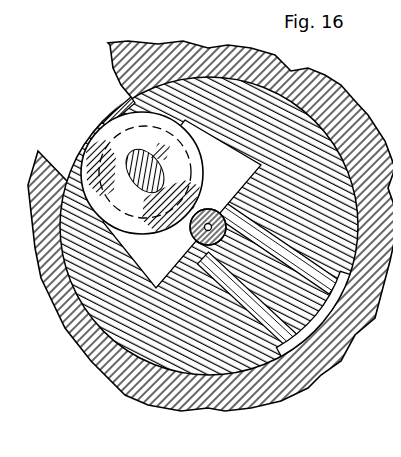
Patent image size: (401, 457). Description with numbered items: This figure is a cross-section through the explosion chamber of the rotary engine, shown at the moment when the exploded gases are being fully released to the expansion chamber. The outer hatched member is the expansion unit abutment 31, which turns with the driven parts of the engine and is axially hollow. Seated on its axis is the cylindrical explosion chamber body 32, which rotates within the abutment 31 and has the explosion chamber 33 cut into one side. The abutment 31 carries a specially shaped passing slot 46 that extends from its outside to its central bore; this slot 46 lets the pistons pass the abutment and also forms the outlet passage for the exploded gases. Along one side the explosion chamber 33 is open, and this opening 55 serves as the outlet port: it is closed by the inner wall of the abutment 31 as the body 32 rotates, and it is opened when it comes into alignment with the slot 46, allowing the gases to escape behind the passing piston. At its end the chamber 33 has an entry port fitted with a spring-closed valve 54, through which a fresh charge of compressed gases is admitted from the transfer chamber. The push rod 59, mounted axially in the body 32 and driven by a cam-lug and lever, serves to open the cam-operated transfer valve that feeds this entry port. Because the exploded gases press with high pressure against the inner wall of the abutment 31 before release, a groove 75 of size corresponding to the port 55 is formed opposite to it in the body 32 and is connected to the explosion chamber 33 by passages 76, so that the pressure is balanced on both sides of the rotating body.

The expansion unit abutment 31 is at (298, 63).
The explosion chamber body 32 is at (334, 99).
The explosion chamber 33 is at (182, 204).
The passing slot 46 is at (108, 102).
The spring-closed valve 54 is at (134, 183).
The opening (outlet port) 55 is at (84, 129).
The push rod 59 is at (193, 236).
The groove 75 is at (317, 310).
The passages 76 is at (322, 278).